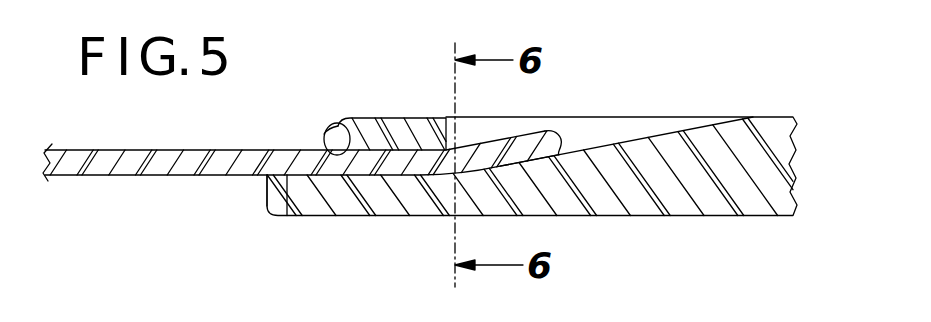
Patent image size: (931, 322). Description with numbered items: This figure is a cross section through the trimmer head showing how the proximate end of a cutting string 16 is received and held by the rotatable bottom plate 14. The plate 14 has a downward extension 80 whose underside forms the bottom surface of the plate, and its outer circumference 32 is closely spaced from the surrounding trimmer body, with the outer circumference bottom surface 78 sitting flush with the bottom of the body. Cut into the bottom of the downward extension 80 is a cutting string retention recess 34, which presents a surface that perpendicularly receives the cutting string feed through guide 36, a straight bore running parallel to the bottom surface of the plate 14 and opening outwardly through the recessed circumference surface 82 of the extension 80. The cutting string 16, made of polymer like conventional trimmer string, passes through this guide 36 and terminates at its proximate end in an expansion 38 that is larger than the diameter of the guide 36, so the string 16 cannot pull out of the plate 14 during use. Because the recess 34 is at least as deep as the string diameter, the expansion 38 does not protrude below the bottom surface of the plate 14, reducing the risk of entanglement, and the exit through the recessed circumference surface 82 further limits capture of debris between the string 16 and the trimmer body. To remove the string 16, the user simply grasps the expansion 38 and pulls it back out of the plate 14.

The rotatable bottom plate 14 is at (690, 218).
The cutting string 16 is at (218, 150).
The outer circumference 32 is at (267, 187).
The cutting string retention recess 34 is at (622, 142).
The cutting string feed through guide 36 is at (335, 124).
The expansion 38 is at (518, 140).
The outer circumference bottom surface 78 is at (287, 216).
The downward extension 80 is at (386, 118).
The recessed circumference surface 82 is at (324, 136).